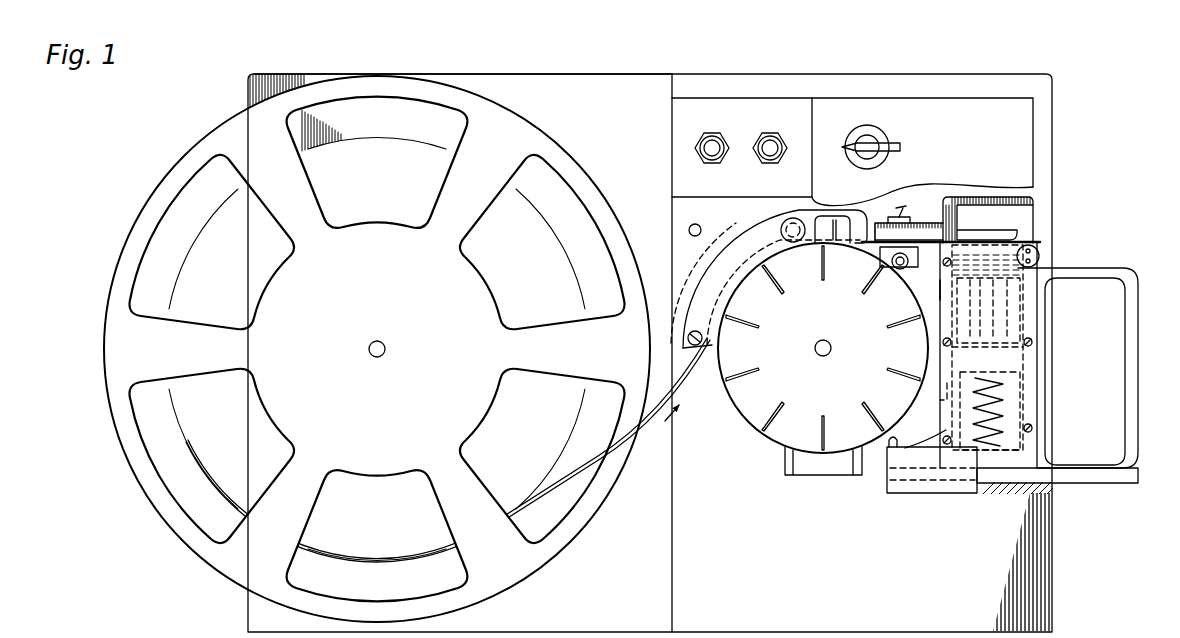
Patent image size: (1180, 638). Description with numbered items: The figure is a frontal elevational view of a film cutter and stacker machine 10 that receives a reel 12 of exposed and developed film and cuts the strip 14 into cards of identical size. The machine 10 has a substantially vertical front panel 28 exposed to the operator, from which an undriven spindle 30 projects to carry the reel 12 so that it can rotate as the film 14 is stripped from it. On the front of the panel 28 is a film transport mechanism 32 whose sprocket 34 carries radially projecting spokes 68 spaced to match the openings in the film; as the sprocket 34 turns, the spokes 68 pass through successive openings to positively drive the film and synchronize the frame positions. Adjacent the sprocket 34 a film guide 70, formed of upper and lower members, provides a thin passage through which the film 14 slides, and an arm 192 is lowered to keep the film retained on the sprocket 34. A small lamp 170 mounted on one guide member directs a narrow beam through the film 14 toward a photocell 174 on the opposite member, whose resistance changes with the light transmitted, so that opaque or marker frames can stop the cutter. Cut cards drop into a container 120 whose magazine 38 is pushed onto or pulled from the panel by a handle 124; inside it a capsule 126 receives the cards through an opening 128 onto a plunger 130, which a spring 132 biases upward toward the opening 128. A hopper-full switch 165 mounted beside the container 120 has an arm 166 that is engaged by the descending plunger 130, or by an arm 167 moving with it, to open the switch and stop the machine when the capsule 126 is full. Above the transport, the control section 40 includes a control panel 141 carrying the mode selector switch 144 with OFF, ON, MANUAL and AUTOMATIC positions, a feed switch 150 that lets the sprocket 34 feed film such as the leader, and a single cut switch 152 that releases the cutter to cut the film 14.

The machine 10 is at (617, 68).
The reel 12 is at (150, 355).
The strip of film 14 is at (568, 483).
The front panel 28 is at (540, 73).
The spindle 30 is at (385, 345).
The film transport mechanism 32 is at (756, 452).
The sprocket 34 is at (750, 389).
The magazine 38 is at (1060, 347).
The control section 40 is at (886, 91).
The spokes 68 is at (750, 326).
The film guide 70 is at (862, 258).
The container 120 is at (931, 289).
The handle 124 is at (1131, 330).
The capsule 126 is at (1008, 322).
The opening 128 is at (1066, 261).
The plunger 130 is at (1015, 360).
The spring 132 is at (1000, 418).
The control panel 141 is at (684, 187).
The mode selector switch 144 is at (880, 137).
The feed switch 150 is at (727, 136).
The single cut switch 152 is at (785, 137).
The hopper-full switch 165 is at (897, 456).
The arm 166 is at (946, 426).
The arm 167 is at (947, 382).
The lamp 170 is at (897, 214).
The photocell 174 is at (889, 275).
The arm 192 is at (768, 231).